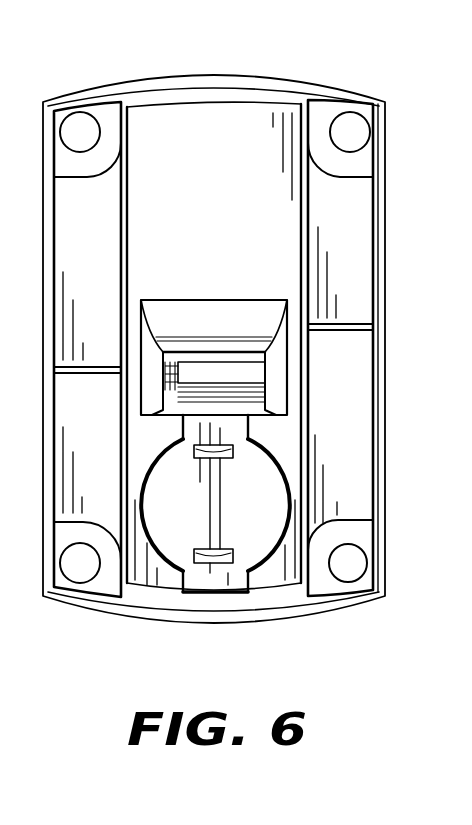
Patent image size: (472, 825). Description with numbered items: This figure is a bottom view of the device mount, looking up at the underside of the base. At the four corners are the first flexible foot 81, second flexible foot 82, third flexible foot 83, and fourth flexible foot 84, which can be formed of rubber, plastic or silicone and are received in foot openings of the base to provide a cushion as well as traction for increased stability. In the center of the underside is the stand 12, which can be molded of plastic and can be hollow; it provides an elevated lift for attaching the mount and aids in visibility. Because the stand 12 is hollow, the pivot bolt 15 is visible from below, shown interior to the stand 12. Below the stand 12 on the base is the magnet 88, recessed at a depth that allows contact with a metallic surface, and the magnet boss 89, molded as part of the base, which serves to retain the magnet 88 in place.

The stand 12 is at (205, 312).
The pivot bolt 15 is at (238, 373).
The first flexible foot 81 is at (76, 132).
The second flexible foot 82 is at (353, 132).
The third flexible foot 83 is at (352, 568).
The fourth flexible foot 84 is at (78, 568).
The magnet 88 is at (212, 552).
The magnet boss 89 is at (250, 512).